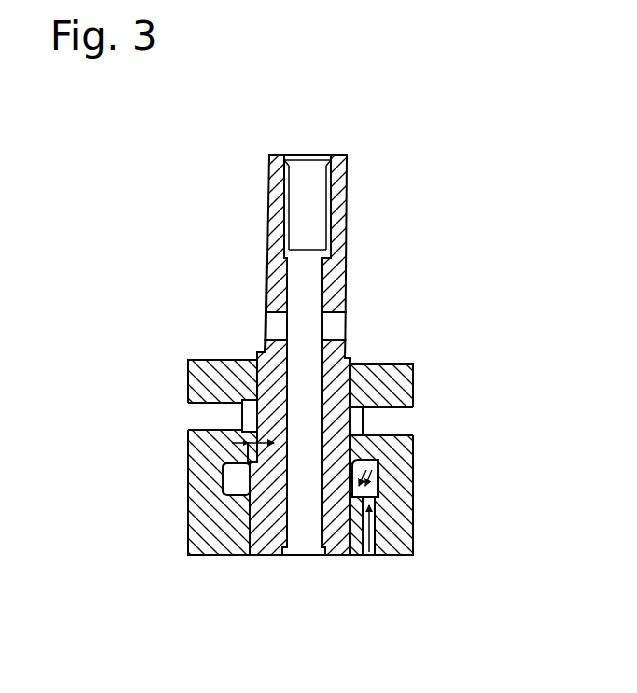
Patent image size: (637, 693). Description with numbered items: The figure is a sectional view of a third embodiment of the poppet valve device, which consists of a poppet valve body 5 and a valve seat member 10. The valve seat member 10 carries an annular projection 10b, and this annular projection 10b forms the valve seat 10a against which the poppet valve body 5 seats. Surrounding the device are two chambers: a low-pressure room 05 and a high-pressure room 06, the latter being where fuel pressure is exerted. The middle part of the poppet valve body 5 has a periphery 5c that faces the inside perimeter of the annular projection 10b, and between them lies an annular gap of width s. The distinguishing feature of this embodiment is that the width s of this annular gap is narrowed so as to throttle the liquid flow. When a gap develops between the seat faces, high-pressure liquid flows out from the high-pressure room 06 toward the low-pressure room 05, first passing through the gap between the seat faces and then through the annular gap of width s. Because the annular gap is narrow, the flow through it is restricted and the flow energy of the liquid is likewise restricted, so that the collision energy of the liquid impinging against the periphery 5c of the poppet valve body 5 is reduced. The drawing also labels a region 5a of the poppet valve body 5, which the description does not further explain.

The poppet valve body 5 is at (343, 287).
The low-pressure room 05 is at (358, 418).
The valve seat member 10 is at (416, 376).
The annular projection 10b is at (380, 461).
The high-pressure room 06 is at (378, 496).
The valve seat 10a is at (341, 557).
The periphery of the middle part of the poppet valve body 5c is at (240, 417).
The width of the annular gap s is at (232, 443).
The cavity of nozzle 5a is at (224, 484).